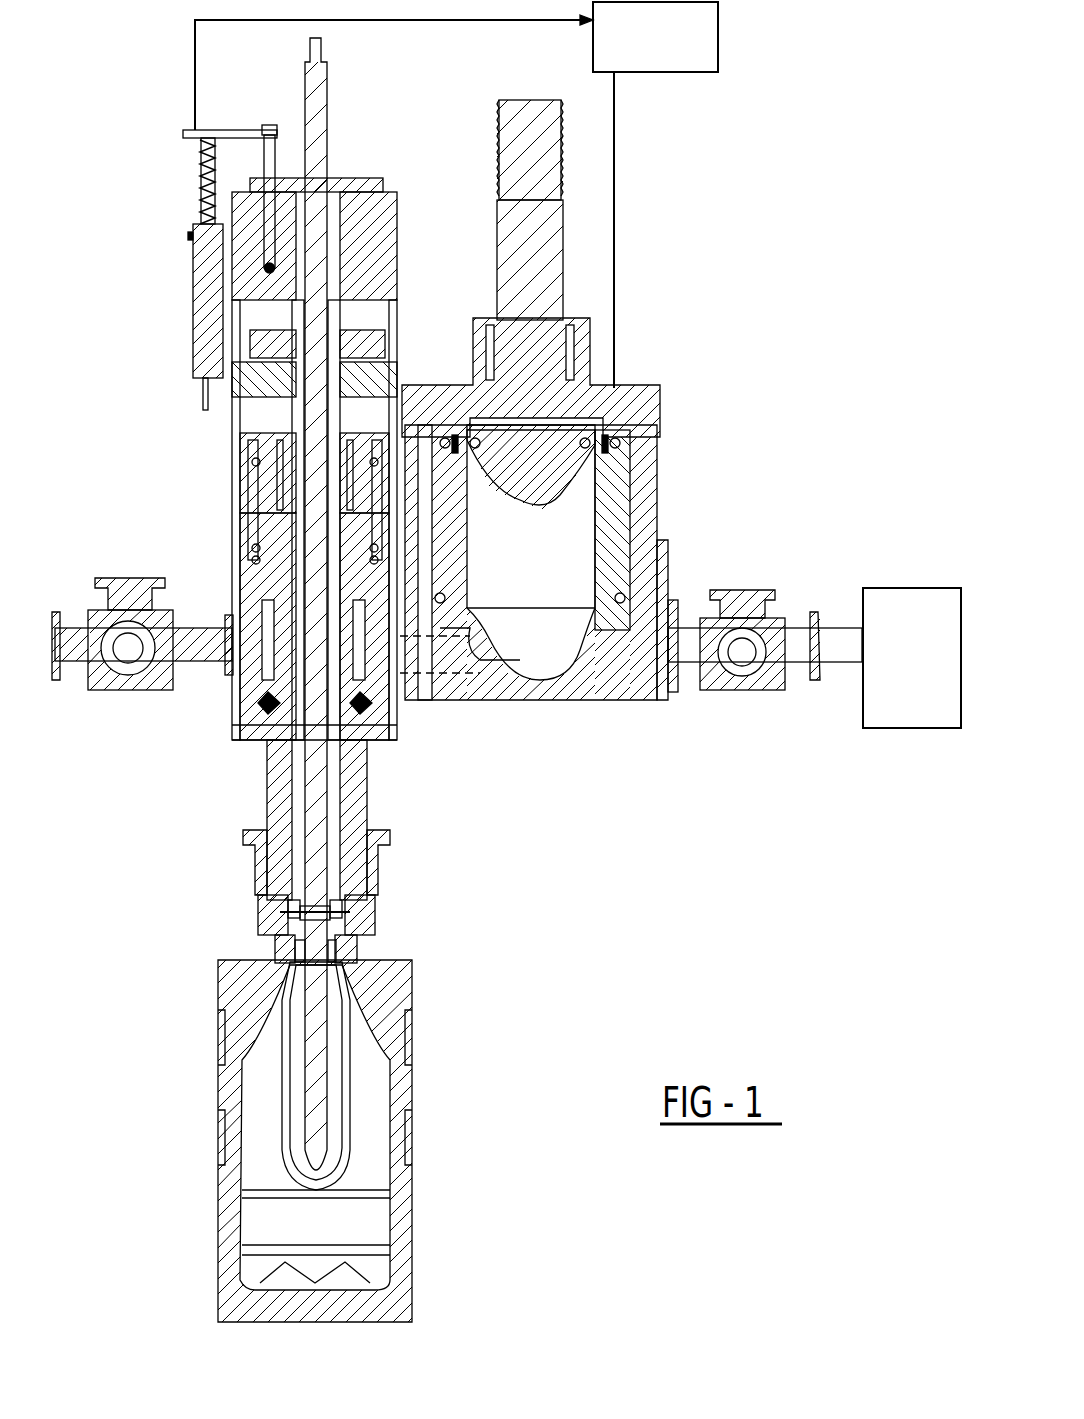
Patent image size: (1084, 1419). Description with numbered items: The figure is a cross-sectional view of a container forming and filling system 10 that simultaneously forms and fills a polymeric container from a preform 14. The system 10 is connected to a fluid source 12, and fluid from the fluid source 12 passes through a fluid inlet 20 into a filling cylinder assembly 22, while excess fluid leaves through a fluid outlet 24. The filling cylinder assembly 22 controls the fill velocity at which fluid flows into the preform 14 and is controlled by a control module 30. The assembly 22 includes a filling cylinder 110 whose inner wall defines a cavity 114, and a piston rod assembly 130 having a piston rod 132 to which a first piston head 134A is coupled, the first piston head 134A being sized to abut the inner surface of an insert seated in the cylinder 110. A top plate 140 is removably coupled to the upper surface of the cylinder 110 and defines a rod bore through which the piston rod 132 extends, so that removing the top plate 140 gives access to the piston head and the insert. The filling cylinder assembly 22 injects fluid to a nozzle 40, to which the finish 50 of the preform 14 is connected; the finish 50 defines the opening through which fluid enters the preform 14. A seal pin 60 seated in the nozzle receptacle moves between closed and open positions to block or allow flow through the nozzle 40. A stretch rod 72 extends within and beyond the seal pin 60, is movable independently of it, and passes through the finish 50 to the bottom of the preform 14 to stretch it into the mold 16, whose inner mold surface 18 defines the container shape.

The container forming and filling system 10 is at (100, 88).
The fluid source 12 is at (928, 728).
The preform 14 is at (345, 1100).
The mold 16 is at (410, 1185).
The inner mold surface 18 is at (255, 1165).
The fluid inlet 20 is at (825, 628).
The filling cylinder assembly 22 is at (650, 490).
The fluid outlet 24 is at (48, 640).
The control module 30 is at (718, 35).
The nozzle 40 is at (372, 920).
The finish 50 is at (340, 950).
The seal pin 60 is at (290, 905).
The stretch rod 72 is at (312, 1118).
The filling cylinder 110 is at (612, 527).
The cavity 114 is at (572, 578).
The piston rod assembly 130 is at (491, 179).
The piston rod 132 is at (517, 138).
The first piston head 134A is at (512, 492).
The top plate 140 is at (650, 393).